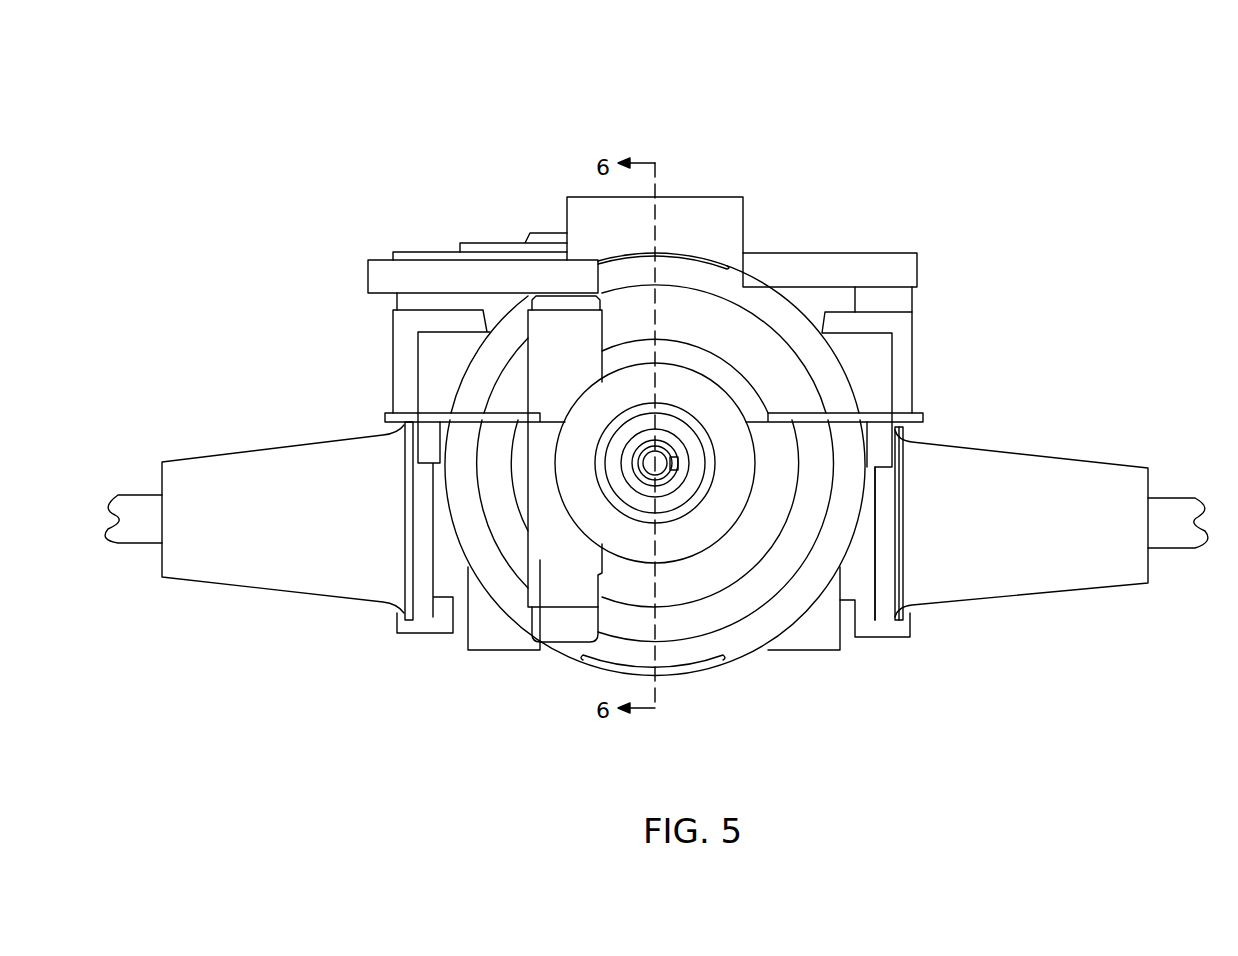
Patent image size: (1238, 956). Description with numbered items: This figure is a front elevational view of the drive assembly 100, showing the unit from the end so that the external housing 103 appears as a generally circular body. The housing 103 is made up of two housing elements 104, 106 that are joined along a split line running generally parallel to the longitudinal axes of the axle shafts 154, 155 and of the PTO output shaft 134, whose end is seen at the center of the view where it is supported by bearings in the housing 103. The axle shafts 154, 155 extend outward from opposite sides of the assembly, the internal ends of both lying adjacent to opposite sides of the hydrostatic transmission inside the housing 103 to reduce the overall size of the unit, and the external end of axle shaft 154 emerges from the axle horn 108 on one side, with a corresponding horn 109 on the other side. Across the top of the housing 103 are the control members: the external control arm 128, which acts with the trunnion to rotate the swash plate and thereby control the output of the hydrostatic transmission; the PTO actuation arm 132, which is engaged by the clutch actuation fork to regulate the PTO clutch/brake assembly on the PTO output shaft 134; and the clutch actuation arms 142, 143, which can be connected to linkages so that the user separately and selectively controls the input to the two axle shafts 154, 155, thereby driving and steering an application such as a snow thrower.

The drive assembly 100 is at (222, 114).
The external housing 103 is at (864, 671).
The housing element 104 is at (783, 366).
The housing element 106 is at (785, 525).
The axle horn 108 is at (1046, 532).
The left bearing housing 109 is at (301, 529).
The external control arm 128 is at (492, 243).
The PTO actuation arm 132 is at (461, 284).
The PTO output shaft 134 is at (648, 463).
The clutch actuation arm 142 is at (831, 281).
The clutch actuation arm 143 is at (422, 252).
The axle shaft 154 is at (1180, 498).
The axle shaft 155 is at (127, 495).